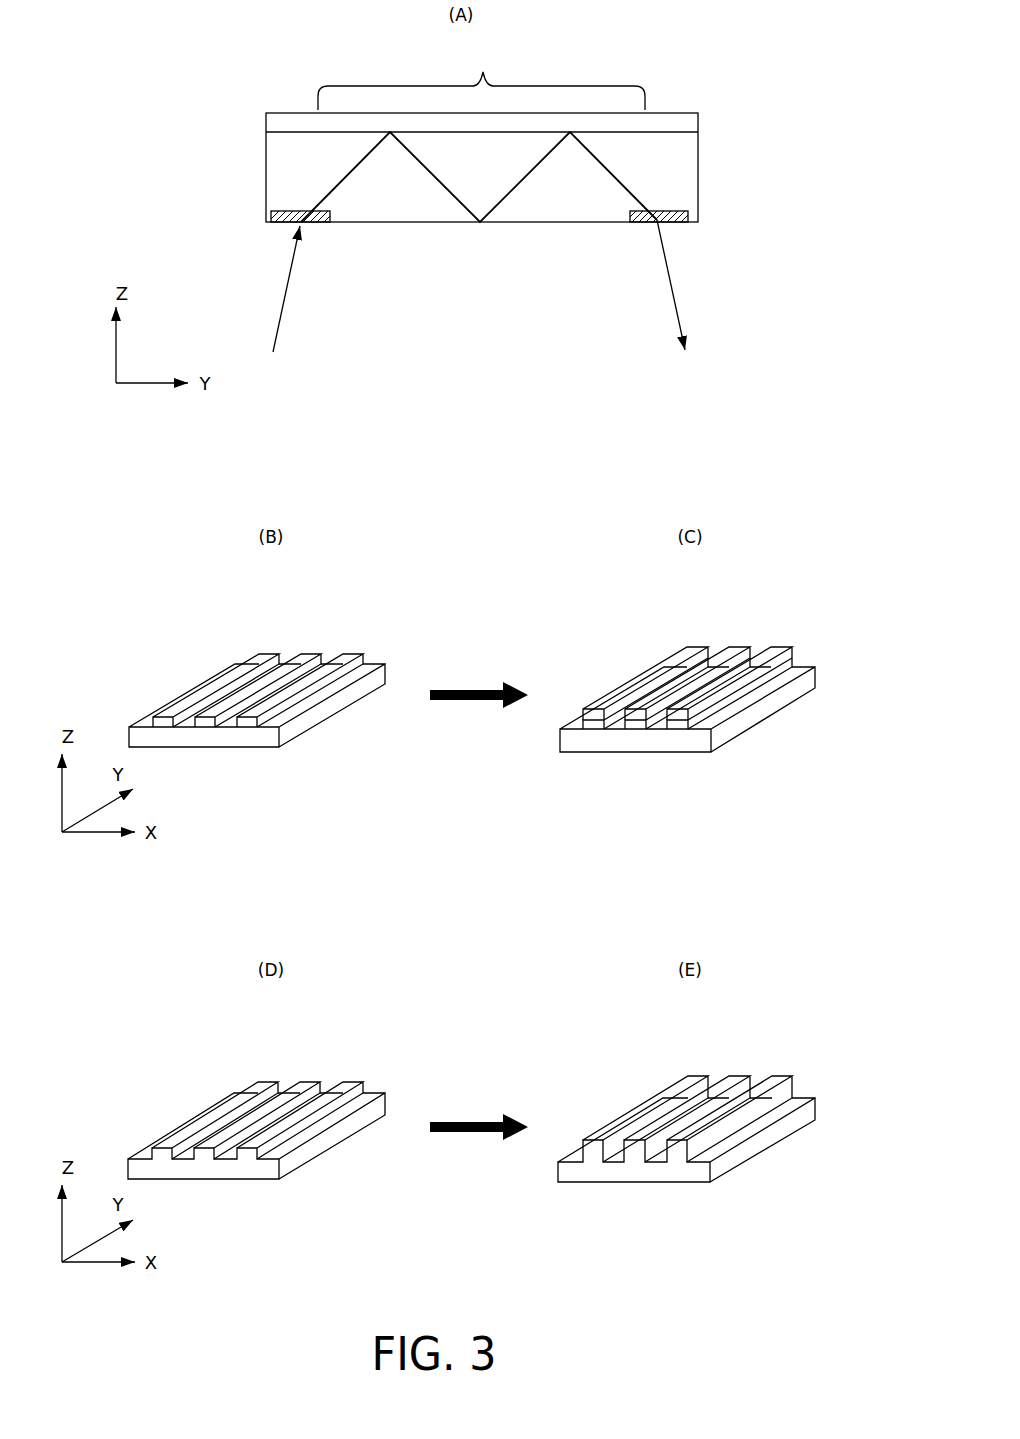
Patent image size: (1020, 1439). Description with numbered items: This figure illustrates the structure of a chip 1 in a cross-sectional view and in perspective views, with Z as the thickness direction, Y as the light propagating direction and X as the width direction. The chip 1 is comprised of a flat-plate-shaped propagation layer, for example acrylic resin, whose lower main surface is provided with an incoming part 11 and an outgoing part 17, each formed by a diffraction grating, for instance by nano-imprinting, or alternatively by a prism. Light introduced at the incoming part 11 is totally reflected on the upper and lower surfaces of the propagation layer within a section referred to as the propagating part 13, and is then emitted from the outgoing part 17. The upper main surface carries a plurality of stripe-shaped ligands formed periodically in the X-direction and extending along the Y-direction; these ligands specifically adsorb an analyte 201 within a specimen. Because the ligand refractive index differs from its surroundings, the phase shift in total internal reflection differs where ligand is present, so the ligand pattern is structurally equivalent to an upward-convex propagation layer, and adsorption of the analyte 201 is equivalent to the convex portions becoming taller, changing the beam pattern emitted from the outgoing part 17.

The chip 1 is at (482, 195).
The incoming part 11 is at (269, 229).
The propagating part 13 is at (481, 76).
The outgoing part 17 is at (681, 235).
The analyte 201 is at (770, 647).